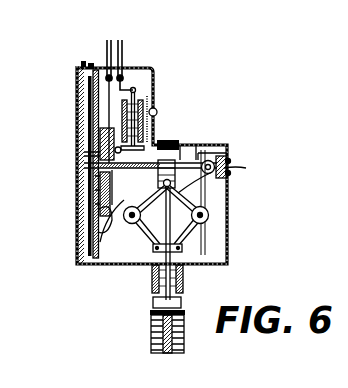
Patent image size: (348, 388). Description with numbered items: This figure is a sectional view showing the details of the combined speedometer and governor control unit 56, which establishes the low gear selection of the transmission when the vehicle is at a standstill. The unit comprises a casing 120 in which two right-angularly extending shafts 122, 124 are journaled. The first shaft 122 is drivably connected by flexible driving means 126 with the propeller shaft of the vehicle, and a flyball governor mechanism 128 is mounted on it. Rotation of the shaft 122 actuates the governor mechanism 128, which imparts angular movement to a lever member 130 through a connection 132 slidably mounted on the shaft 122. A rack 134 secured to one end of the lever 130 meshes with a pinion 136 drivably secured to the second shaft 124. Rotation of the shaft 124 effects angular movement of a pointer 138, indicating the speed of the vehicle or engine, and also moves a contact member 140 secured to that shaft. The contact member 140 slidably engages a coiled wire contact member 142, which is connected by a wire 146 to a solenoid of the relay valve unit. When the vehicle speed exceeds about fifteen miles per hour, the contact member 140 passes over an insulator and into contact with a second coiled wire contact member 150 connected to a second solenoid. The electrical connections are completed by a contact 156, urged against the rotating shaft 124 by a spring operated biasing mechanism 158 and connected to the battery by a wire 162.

The combined speedometer and governor control unit 56 is at (188, 136).
The casing 120 is at (232, 260).
The shaft 122 is at (172, 228).
The shaft 124 is at (82, 181).
The flexible driving means 126 is at (160, 350).
The flyball governor mechanism 128 is at (207, 212).
The lever member 130 is at (210, 146).
The connection 132 is at (230, 171).
The rack 134 is at (124, 202).
The pinion 136 is at (99, 232).
The pointer 138 is at (88, 116).
The contact member 140 is at (97, 129).
The coiled wire contact member 142 is at (80, 153).
The wire 146 is at (106, 52).
The second coiled wire contact member 150 is at (80, 201).
The contact 156 is at (165, 136).
The spring operated biasing mechanism 158 is at (154, 99).
The wire 162 is at (122, 53).